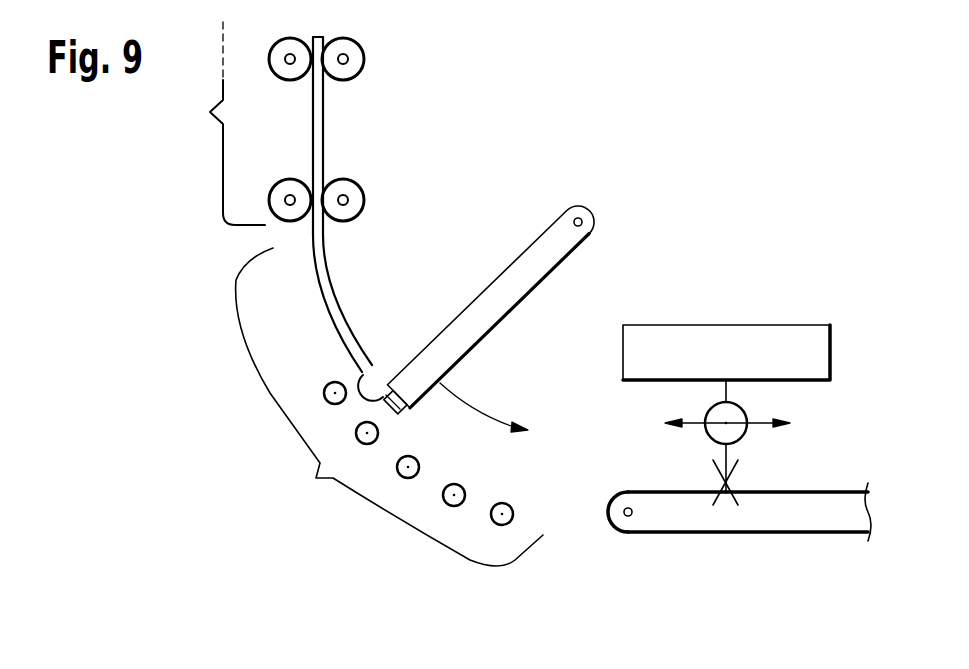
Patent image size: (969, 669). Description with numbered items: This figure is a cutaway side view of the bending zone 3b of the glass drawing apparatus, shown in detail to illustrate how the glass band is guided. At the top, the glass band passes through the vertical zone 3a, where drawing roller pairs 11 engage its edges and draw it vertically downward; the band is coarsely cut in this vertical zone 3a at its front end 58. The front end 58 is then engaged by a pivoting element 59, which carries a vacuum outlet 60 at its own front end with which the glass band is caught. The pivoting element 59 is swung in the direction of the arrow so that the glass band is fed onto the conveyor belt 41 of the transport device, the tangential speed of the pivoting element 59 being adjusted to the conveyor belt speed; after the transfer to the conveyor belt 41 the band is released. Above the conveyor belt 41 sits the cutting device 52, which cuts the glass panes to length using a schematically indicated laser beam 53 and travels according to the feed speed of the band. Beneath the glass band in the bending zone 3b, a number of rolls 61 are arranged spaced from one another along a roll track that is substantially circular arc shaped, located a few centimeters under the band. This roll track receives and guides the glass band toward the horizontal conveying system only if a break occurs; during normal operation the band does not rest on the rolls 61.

The vertical zone 3a is at (217, 123).
The bending zone 3b is at (389, 407).
The drawing roller pairs 11 is at (364, 61).
The conveyor belt 41 is at (688, 498).
The cutting device 52 is at (788, 330).
The laser beam 53 is at (733, 481).
The front end 58 is at (367, 370).
The pivoting element 59 is at (542, 243).
The vacuum outlet 60 is at (407, 380).
The rolls 61 is at (356, 432).